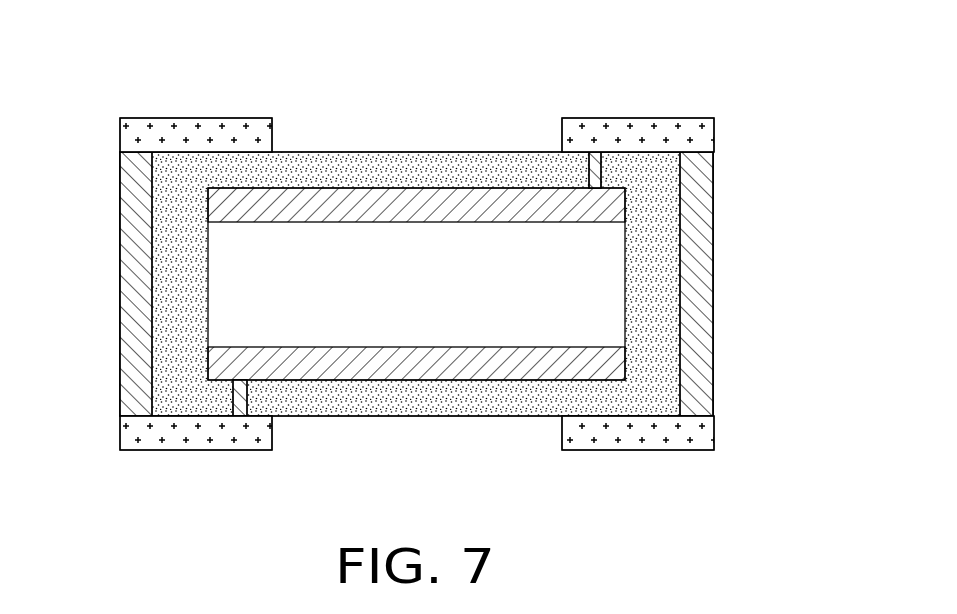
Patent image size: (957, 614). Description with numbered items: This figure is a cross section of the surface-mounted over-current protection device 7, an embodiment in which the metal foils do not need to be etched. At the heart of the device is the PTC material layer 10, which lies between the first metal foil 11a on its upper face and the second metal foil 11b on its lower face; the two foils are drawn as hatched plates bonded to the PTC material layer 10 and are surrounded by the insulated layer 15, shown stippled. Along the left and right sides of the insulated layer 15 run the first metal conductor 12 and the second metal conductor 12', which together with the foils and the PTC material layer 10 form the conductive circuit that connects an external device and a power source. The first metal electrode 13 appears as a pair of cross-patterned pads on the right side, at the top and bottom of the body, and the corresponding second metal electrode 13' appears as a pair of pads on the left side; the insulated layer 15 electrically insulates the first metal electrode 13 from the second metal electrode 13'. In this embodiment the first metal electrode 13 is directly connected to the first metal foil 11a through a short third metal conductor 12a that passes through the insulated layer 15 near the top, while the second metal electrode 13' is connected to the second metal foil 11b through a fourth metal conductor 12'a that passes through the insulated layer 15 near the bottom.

The surface-mounted over-current protection device 7 is at (688, 80).
The PTC material layer 10 is at (604, 283).
The first metal foil 11a is at (382, 202).
The second metal foil 11b is at (445, 366).
The first metal conductor 12 is at (736, 284).
The second metal conductor 12' is at (93, 284).
The third metal conductor 12a is at (600, 174).
The fourth metal conductor 12'a is at (132, 398).
The first metal electrode 13 is at (675, 283).
The second metal electrode 13' is at (154, 286).
The insulated layer 15 is at (310, 170).